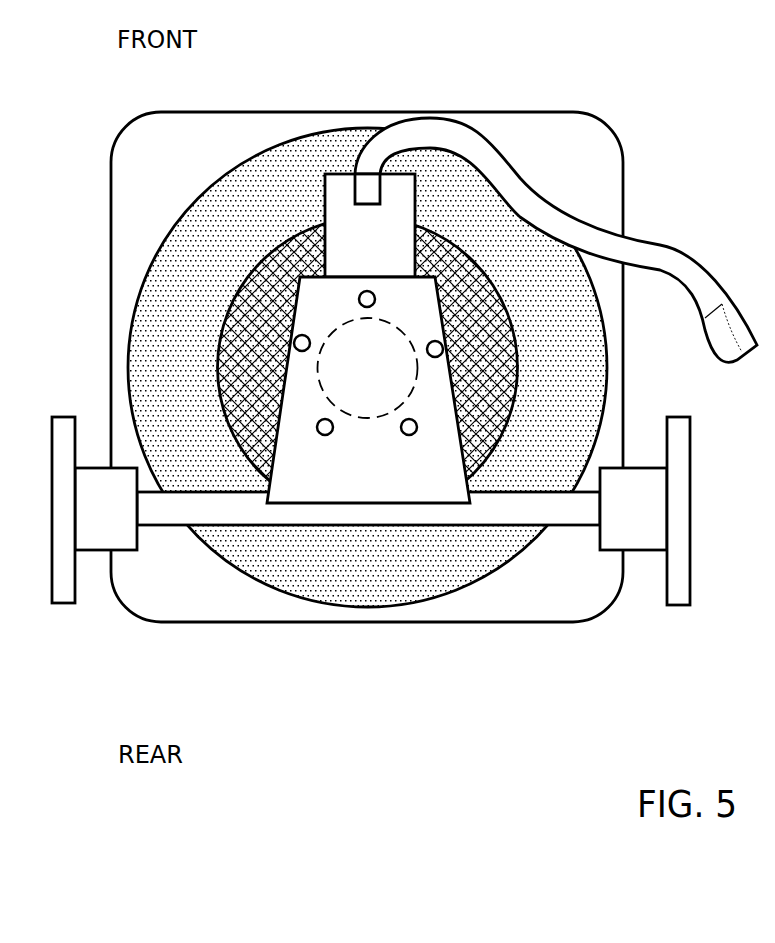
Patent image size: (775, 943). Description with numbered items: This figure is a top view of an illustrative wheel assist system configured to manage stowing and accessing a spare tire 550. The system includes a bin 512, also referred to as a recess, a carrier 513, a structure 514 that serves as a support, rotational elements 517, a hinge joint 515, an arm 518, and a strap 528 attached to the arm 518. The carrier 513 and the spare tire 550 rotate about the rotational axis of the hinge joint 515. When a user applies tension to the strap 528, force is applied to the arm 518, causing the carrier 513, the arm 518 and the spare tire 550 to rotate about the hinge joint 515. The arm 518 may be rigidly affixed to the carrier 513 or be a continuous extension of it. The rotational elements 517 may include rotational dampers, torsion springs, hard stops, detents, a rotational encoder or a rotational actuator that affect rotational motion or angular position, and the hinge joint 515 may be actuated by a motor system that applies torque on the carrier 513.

The bin 512 is at (584, 161).
The carrier 513 is at (443, 478).
The structure 514 is at (73, 605).
The hinge joint 515 is at (232, 512).
The rotational elements 517 is at (128, 550).
The arm 518 is at (390, 257).
The strap 528 is at (667, 238).
The spare tire 550 is at (304, 193).